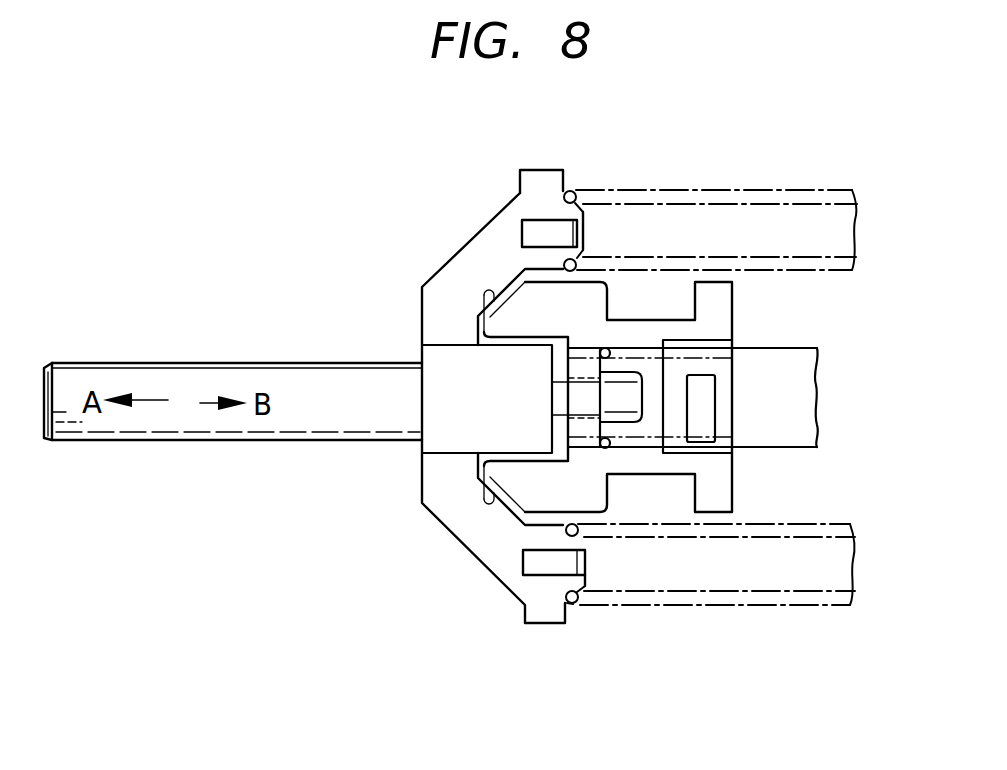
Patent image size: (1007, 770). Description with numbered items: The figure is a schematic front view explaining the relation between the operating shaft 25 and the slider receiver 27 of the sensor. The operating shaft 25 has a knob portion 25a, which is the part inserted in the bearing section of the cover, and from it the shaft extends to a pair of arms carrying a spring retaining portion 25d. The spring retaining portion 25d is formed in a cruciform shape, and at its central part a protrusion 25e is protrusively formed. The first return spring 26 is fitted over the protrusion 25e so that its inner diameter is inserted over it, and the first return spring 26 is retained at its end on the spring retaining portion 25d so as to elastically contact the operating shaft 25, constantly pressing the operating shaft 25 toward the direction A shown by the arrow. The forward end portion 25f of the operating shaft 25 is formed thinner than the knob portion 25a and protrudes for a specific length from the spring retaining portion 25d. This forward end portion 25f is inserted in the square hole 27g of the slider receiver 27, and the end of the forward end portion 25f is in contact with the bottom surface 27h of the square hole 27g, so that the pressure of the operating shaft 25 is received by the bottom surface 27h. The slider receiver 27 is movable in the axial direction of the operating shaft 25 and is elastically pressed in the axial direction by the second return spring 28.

The operating shaft 25 is at (158, 363).
The knob portion 25a is at (218, 370).
The spring retaining portion 25d is at (543, 230).
The protrusion 25e is at (585, 232).
The forward end portion 25f is at (633, 399).
The first return spring 26 is at (730, 185).
The slider receiver 27 is at (534, 482).
The square hole 27g is at (625, 420).
The bottom surface 27h is at (635, 427).
The second return spring 28 is at (787, 348).